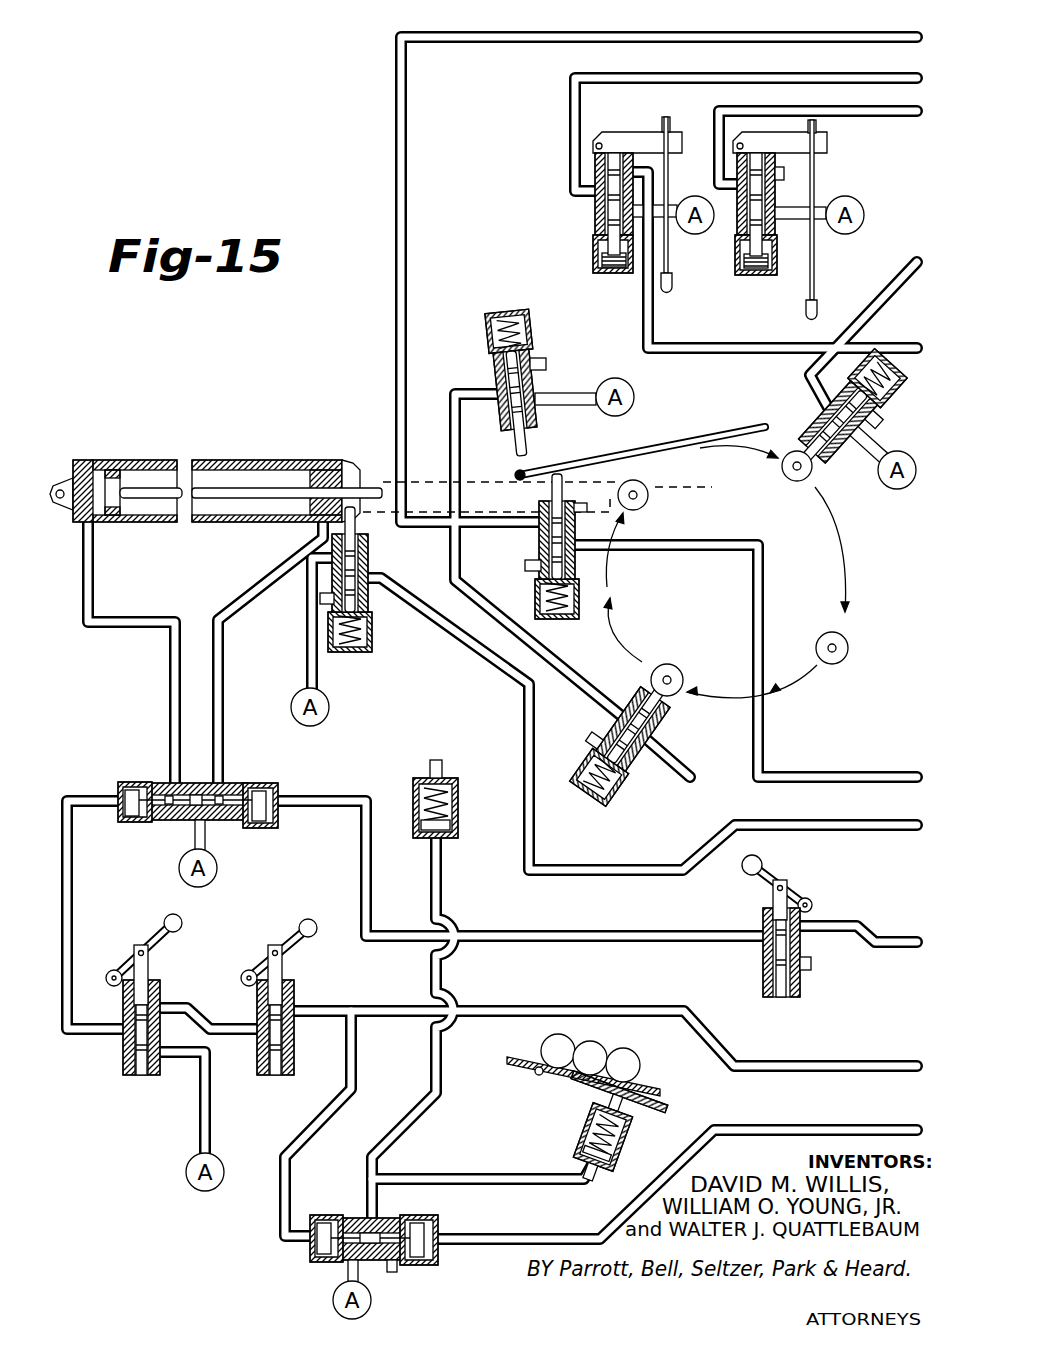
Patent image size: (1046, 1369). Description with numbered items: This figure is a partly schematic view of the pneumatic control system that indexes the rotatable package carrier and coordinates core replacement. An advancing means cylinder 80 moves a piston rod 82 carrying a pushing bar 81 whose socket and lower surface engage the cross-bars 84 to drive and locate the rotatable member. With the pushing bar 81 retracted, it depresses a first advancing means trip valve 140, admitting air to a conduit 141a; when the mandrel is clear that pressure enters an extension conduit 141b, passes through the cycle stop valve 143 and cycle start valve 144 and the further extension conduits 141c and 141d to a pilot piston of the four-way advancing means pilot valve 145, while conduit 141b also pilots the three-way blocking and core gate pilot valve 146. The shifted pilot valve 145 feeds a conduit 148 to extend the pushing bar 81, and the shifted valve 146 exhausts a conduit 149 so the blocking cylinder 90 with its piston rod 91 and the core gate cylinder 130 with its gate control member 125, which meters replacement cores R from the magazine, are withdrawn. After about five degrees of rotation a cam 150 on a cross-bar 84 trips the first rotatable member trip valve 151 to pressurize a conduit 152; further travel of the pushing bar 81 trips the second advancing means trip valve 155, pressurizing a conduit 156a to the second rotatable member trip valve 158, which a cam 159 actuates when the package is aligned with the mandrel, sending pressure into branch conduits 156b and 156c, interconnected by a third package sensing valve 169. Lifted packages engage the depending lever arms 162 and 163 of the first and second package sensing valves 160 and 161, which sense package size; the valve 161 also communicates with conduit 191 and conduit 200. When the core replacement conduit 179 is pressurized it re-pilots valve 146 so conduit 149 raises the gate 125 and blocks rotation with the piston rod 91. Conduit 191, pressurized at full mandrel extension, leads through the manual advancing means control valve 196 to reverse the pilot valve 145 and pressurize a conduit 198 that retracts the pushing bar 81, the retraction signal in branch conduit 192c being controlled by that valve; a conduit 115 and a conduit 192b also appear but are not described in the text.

The advancing means cylinder 80 is at (262, 462).
The pushing bar 81 is at (383, 480).
The piston rod 82 is at (152, 488).
The cross-bars 84 is at (648, 498).
The blocking cylinder 90 is at (466, 798).
The piston rod 91 is at (443, 746).
The conduit 115 is at (915, 112).
The gate control member 125 is at (590, 1090).
The core gate cylinder 130 is at (582, 1136).
The first advancing means trip valve 140 is at (368, 560).
The conduit 141a is at (917, 829).
The extension conduit 141b is at (917, 1062).
The further extension conduit 141c is at (207, 1012).
The branch conduit 141d is at (73, 910).
The cycle stop valve 143 is at (292, 990).
The cycle start valve 144 is at (123, 1058).
The four-way advancing means pilot valve 145 is at (162, 780).
The three-way blocking and core gate pilot valve 146 is at (356, 1214).
The conduit 148 is at (174, 622).
The conduit 149 is at (405, 1125).
The cam 150 is at (641, 510).
The first rotatable member trip valve 151 is at (826, 426).
The conduit 152 is at (900, 280).
The second advancing means trip valve 155 is at (548, 364).
The conduit 156a is at (558, 660).
The branch conduit 156b is at (752, 574).
The branch conduit 156c is at (918, 38).
The second rotatable member trip valve 158 is at (655, 738).
The cam 159 is at (848, 650).
The first package sensing valve 160 is at (736, 238).
The second package sensing valve 161 is at (595, 215).
The actuating lever arm 162 is at (808, 312).
The actuating lever arm 163 is at (670, 290).
The third package sensing valve 169 is at (540, 548).
The conduit 179 is at (917, 1130).
The conduit 191 is at (918, 345).
The conduit 192b is at (910, 942).
The branch conduit 192c is at (627, 935).
The advancing means control valve 196 is at (800, 948).
The conduit 198 is at (270, 572).
The conduit 200 is at (915, 83).
The replacement cores R is at (590, 1038).